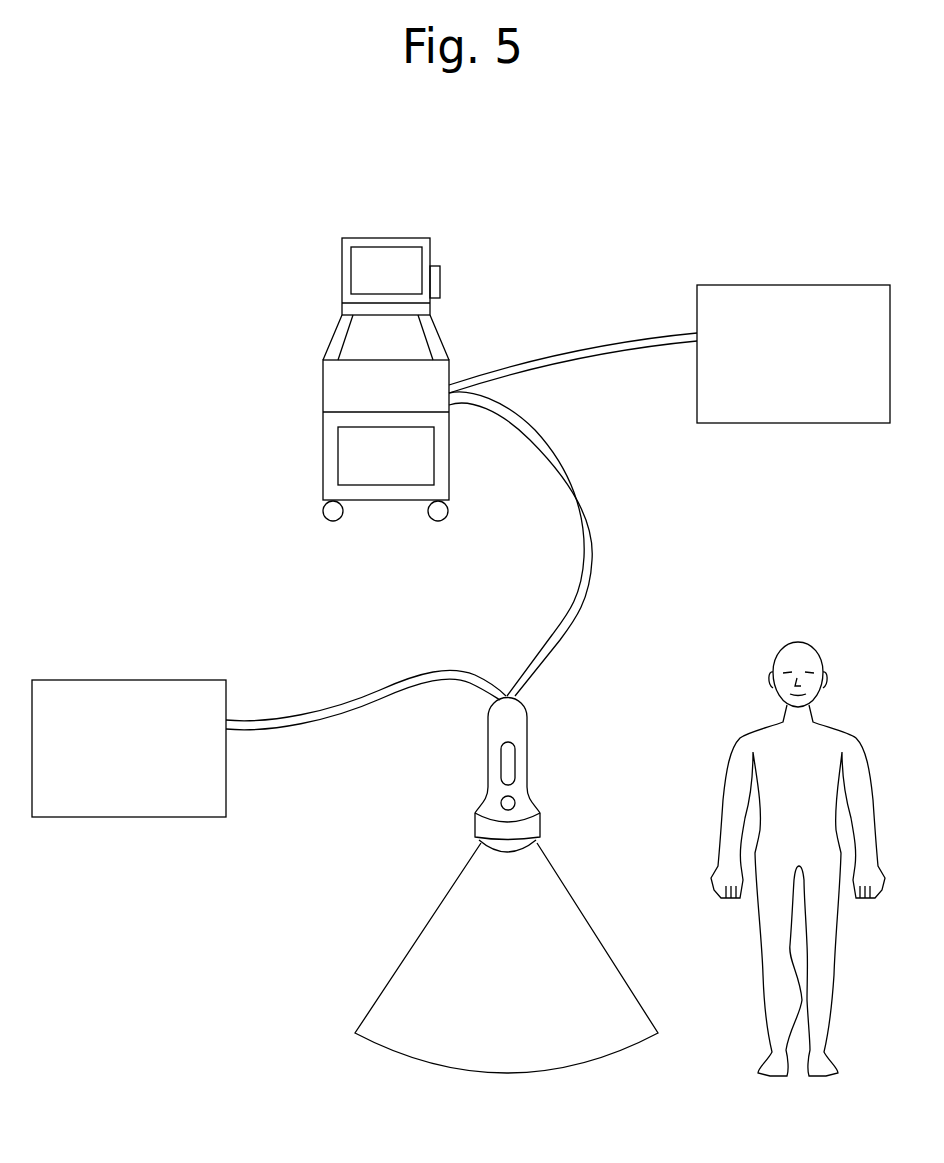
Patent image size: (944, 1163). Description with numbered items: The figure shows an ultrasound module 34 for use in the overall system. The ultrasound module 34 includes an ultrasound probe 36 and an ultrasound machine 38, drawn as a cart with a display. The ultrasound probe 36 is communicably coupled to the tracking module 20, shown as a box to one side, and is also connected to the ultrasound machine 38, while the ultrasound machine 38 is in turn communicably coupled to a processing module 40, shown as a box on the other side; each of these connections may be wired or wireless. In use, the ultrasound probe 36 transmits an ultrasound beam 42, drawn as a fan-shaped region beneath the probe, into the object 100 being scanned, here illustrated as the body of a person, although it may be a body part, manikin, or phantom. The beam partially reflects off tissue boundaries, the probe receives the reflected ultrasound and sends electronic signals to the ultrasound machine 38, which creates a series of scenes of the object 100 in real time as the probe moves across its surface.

The ultrasound module 34 is at (162, 238).
The ultrasound machine 38 is at (388, 238).
The processing module 40 is at (778, 368).
The tracking module 20 is at (111, 758).
The ultrasound probe 36 is at (528, 733).
The ultrasound beam 42 is at (491, 980).
The object being scanned 100 is at (797, 641).